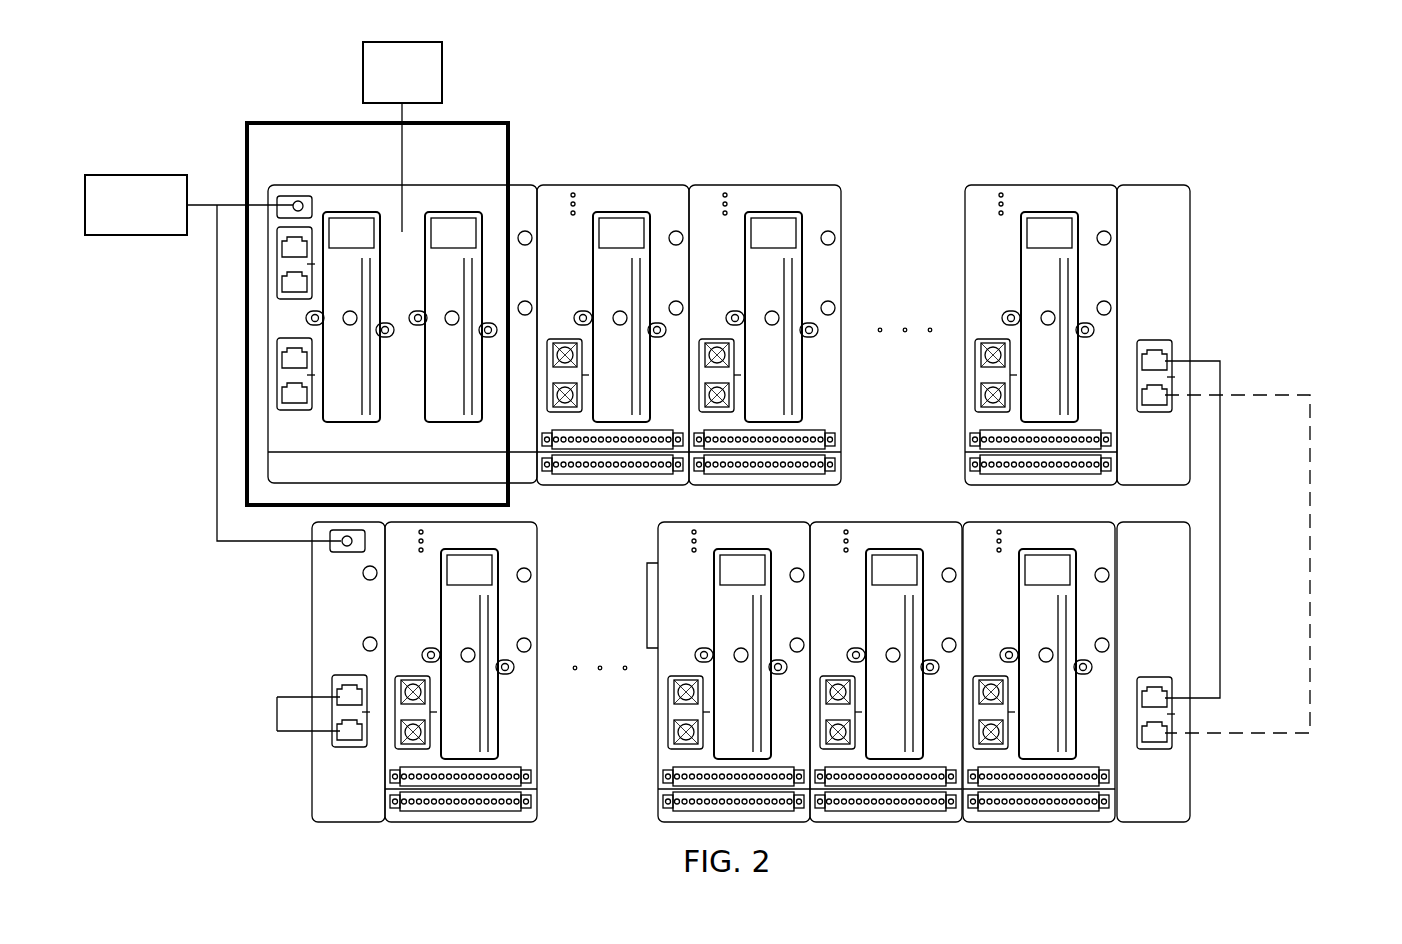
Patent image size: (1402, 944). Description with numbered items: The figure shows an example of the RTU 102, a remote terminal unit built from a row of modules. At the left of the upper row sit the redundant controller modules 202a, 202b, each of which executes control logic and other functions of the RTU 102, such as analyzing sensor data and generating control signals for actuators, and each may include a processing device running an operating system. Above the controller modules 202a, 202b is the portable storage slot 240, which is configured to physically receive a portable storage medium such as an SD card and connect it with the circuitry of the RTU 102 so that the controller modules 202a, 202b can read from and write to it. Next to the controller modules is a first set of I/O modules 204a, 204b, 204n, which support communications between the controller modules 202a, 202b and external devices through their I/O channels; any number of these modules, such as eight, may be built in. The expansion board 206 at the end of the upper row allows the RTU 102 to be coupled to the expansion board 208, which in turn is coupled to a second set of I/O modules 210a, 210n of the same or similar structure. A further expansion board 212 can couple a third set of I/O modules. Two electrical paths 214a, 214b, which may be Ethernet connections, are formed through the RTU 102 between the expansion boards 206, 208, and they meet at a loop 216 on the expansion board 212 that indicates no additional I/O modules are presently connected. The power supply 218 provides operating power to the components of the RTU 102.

The RTU 102 is at (1244, 114).
The controller module 202a is at (351, 221).
The controller module 202b is at (454, 221).
The I/O module 204a is at (622, 221).
The I/O module 204b is at (774, 221).
The I/O module 204n is at (1076, 221).
The expansion board 206 is at (1133, 172).
The expansion board 208 is at (1180, 778).
The I/O module 210a is at (1055, 826).
The I/O module 210n is at (425, 828).
The expansion board 212 is at (320, 776).
The electrical path 214a is at (1220, 529).
The electrical path 214b is at (1310, 576).
The loop 216 is at (277, 713).
The power supply 218 is at (137, 173).
The portable storage slot 240 is at (362, 73).